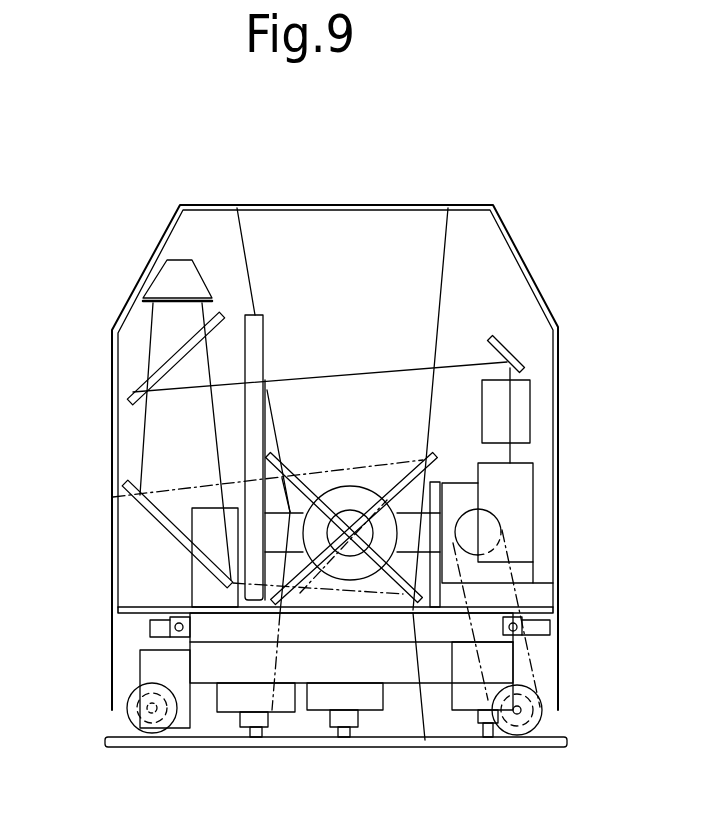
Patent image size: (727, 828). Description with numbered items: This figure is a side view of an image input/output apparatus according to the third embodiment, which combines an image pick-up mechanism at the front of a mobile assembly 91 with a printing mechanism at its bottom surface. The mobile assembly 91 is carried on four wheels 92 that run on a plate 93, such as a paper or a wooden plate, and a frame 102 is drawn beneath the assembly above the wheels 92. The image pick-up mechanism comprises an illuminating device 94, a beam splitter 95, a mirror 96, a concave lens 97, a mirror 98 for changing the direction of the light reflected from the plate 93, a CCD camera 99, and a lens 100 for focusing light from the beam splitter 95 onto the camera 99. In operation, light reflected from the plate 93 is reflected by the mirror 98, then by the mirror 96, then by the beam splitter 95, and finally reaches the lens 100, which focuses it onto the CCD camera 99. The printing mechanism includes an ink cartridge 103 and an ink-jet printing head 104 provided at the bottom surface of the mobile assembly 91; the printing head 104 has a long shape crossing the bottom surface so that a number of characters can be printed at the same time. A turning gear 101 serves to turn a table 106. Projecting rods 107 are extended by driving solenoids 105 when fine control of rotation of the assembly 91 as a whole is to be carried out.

The mobile assembly 91 is at (331, 168).
The wheels 92 is at (123, 713).
The plate 93 is at (560, 745).
The illuminating device 94 is at (165, 275).
The beam splitter 95 is at (133, 395).
The mirror 96 is at (122, 498).
The concave lens 97 is at (257, 318).
The mirror 98 is at (280, 462).
The CCD camera 99 is at (522, 483).
The lens 100 is at (520, 410).
The turning gear 101 is at (523, 623).
The frame 102 is at (537, 682).
The ink cartridge 103 is at (323, 670).
The printing head 104 is at (353, 733).
The solenoids 105 is at (143, 677).
The table 106 is at (540, 607).
The projecting rods 107 is at (223, 710).